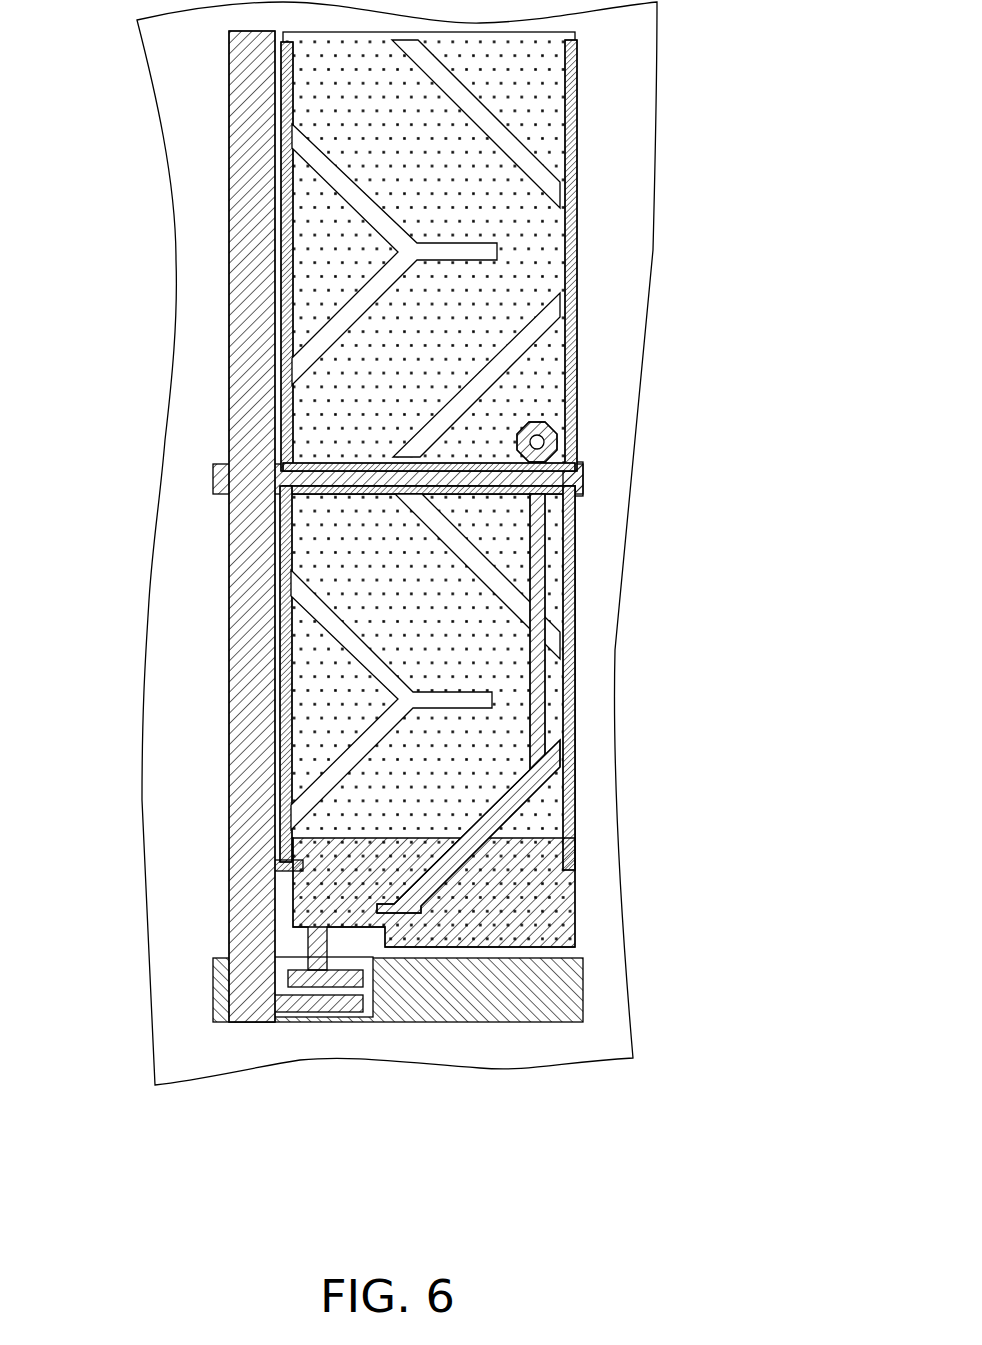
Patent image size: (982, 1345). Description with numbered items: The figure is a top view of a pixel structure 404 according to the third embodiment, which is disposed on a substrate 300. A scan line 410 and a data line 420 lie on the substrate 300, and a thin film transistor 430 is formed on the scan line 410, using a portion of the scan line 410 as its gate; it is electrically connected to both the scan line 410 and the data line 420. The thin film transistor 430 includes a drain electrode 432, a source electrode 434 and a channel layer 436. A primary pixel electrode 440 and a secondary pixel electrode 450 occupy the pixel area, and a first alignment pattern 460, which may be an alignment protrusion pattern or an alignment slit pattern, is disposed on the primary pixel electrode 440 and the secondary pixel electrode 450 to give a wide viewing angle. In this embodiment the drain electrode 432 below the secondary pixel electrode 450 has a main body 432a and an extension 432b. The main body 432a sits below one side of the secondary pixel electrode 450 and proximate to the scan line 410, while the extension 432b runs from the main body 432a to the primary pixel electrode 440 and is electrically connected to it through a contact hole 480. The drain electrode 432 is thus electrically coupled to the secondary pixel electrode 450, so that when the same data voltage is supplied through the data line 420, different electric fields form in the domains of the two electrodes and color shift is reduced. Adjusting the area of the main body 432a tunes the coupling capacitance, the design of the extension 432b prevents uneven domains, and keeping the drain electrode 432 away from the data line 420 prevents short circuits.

The substrate 300 is at (573, 1046).
The pixel structure 404 is at (435, 615).
The scan line 410 is at (550, 990).
The data line 420 is at (252, 164).
The thin film transistor 430 is at (532, 847).
The drain electrode 432 is at (549, 818).
The main body 432a is at (555, 890).
The extension 432b is at (747, 903).
The source electrode 434 is at (312, 1068).
The channel layer 436 is at (374, 1006).
The primary pixel electrode 440 is at (540, 240).
The secondary pixel electrode 450 is at (575, 490).
The first alignment pattern 460 is at (528, 163).
The contact hole 480 is at (533, 442).